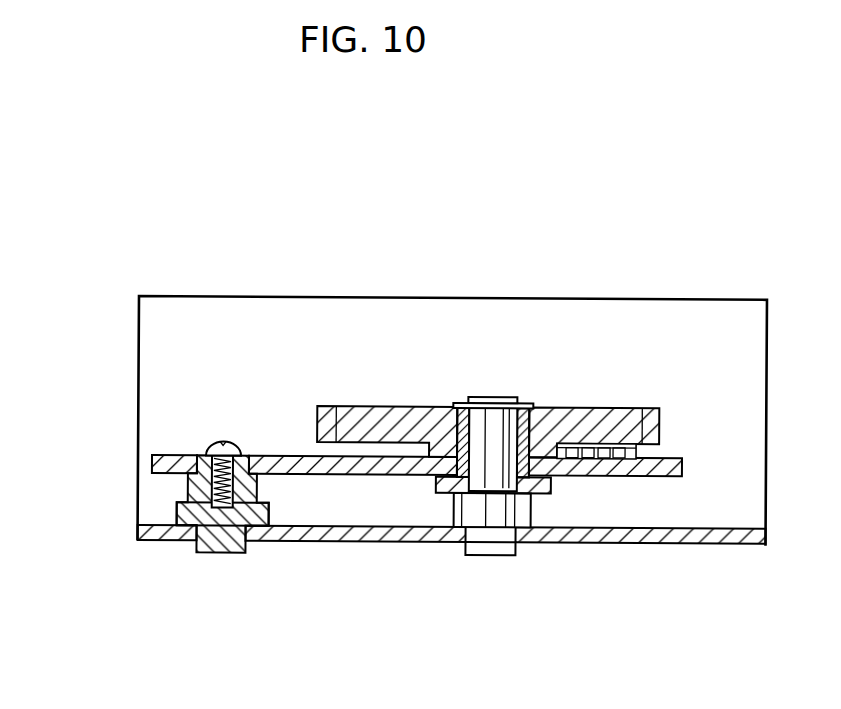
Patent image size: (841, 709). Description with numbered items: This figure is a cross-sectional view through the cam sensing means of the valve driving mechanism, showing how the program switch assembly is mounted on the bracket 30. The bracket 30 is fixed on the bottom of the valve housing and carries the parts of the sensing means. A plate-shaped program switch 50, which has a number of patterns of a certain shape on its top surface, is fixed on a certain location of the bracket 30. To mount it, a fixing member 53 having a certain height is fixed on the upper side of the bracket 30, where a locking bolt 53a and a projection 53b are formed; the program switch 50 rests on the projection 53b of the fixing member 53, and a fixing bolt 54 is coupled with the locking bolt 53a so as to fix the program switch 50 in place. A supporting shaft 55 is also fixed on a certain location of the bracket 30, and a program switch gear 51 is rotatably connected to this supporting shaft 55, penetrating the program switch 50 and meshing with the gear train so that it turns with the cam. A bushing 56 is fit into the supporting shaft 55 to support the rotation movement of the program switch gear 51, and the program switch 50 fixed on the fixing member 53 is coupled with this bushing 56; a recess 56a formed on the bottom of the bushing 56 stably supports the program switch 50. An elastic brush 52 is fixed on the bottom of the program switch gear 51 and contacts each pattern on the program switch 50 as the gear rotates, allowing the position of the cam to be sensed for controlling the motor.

The bracket 30 is at (740, 380).
The program switch 50 is at (600, 478).
The program switch gear 51 is at (562, 450).
The elastic brush 52 is at (630, 452).
The fixing member 53 is at (210, 552).
The locking bolt 53a is at (239, 497).
The projection 53b is at (195, 462).
The fixing bolt 54 is at (220, 443).
The supporting shaft 55 is at (495, 397).
The bushing 56 is at (433, 407).
The recess 56a is at (437, 478).